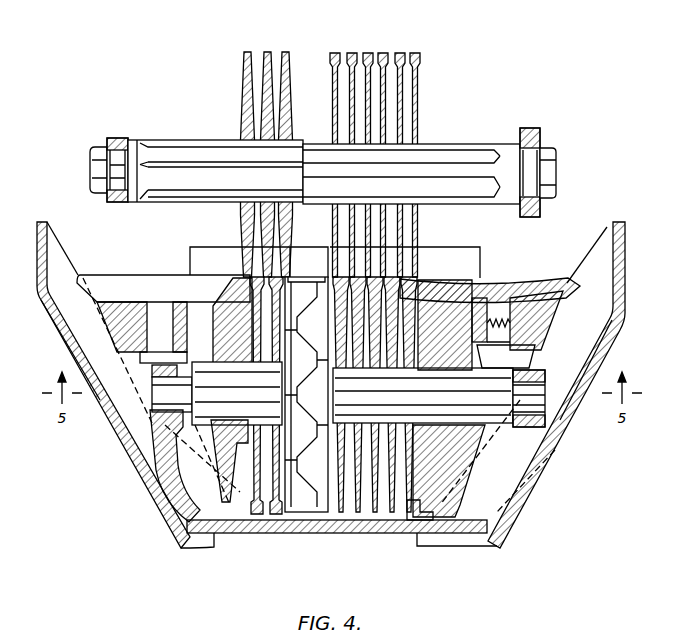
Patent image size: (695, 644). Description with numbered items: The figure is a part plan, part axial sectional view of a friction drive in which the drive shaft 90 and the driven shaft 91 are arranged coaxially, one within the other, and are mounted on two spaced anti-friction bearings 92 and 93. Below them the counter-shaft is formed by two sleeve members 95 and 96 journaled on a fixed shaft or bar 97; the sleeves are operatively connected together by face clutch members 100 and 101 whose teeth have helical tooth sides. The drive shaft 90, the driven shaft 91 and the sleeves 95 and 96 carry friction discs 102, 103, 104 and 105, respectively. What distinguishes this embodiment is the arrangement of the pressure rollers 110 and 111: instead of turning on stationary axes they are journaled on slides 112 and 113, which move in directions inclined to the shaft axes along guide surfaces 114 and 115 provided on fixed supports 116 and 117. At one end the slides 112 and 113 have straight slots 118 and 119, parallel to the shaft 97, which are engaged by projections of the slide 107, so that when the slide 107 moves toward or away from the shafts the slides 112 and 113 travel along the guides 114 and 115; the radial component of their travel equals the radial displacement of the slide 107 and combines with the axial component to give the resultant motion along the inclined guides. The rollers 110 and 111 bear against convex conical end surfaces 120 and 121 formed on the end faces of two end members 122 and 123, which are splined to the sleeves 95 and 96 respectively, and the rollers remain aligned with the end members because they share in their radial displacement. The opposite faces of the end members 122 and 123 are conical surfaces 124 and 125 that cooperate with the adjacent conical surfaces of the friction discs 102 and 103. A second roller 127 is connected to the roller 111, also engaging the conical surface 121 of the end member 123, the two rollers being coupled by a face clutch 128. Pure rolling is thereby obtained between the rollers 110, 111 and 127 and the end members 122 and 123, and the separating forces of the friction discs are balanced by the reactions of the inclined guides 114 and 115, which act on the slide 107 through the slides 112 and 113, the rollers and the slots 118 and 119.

The drive shaft 90 is at (146, 143).
The driven shaft 91 is at (509, 150).
The anti-friction bearing 92 is at (117, 137).
The anti-friction bearing 93 is at (526, 130).
The sleeve member 95 is at (203, 362).
The sleeve member 96 is at (513, 422).
The fixed shaft 97 is at (537, 395).
The face clutch member 100 is at (292, 505).
The face clutch member 101 is at (318, 505).
The friction discs 102 is at (286, 52).
The friction discs 103 is at (384, 53).
The friction discs 104 is at (263, 520).
The friction discs 105 is at (381, 515).
The slide 107 is at (472, 265).
The pressure roller 110 is at (160, 282).
The pressure roller 111 is at (505, 292).
The slide 112 is at (120, 337).
The slide 113 is at (548, 328).
The guide surface 114 is at (78, 262).
The guide surface 115 is at (598, 249).
The fixed support 116 is at (52, 316).
The fixed support 117 is at (614, 351).
The straight slot 118 is at (222, 523).
The straight slot 119 is at (413, 487).
The convex conical end surface 120 is at (210, 503).
The convex conical end surface 121 is at (445, 500).
The end member 122 is at (228, 278).
The end member 123 is at (437, 288).
The conical surface 124 is at (238, 542).
The conical surface 125 is at (421, 513).
The second roller 127 is at (522, 351).
The face clutch 128 is at (486, 323).